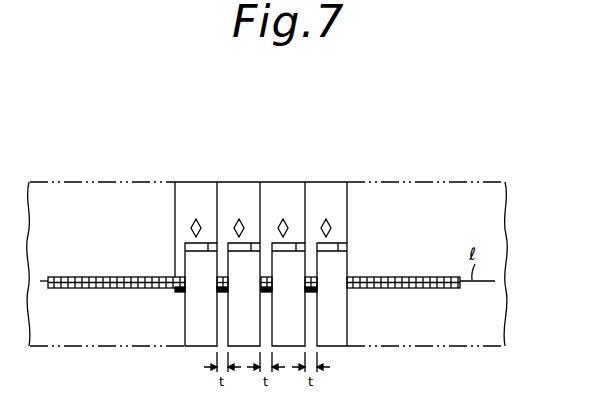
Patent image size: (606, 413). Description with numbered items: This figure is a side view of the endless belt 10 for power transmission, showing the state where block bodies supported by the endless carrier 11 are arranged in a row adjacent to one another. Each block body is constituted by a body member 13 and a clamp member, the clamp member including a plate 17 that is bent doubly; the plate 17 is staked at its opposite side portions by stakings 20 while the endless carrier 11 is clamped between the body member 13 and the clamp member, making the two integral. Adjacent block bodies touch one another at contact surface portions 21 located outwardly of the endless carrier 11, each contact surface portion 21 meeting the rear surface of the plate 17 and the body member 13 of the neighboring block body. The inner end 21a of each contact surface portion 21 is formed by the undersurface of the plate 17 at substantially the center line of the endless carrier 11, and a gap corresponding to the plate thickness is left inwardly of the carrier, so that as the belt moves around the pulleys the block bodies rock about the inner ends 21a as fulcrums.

The endless belt 10 is at (165, 155).
The endless carrier 11 is at (440, 290).
The body member 13 is at (333, 344).
The plate 17 is at (325, 188).
The stakings 20 is at (190, 226).
The contact surface portion 21 is at (177, 196).
The inner end 21a is at (177, 292).